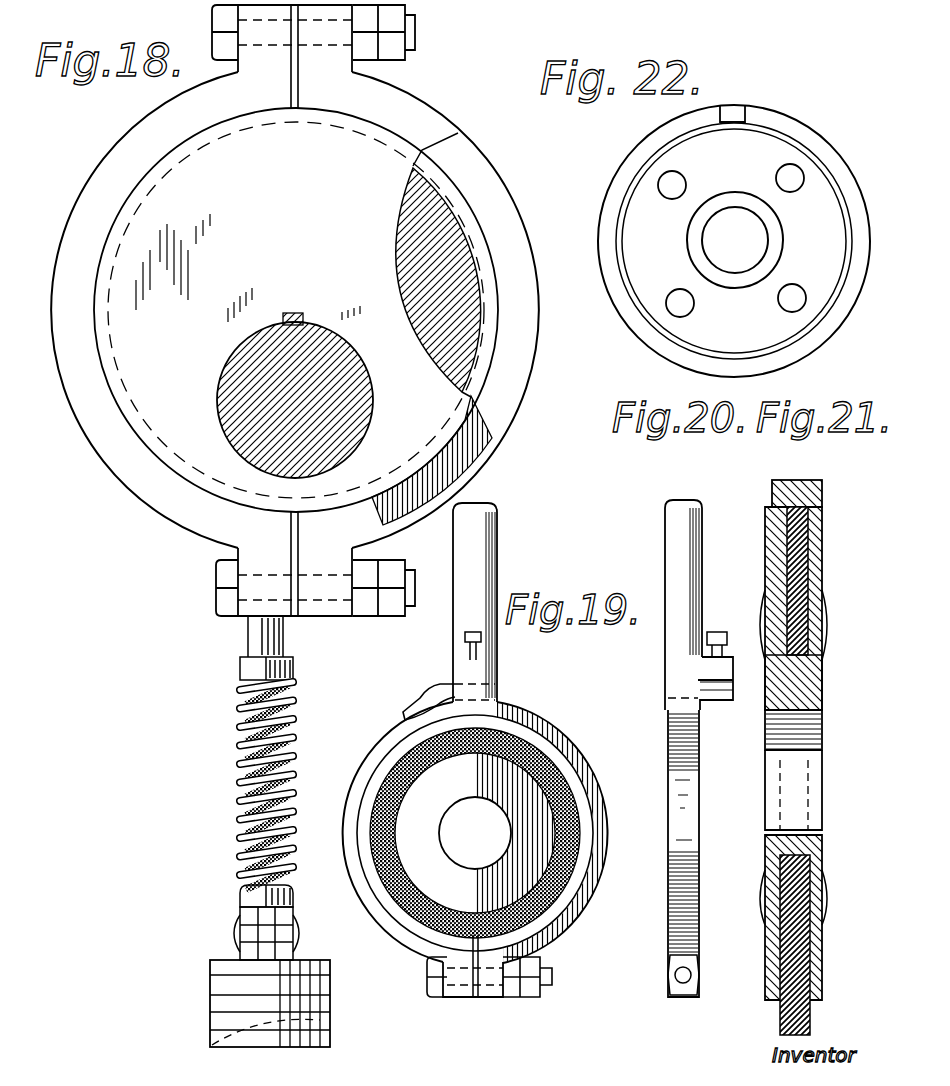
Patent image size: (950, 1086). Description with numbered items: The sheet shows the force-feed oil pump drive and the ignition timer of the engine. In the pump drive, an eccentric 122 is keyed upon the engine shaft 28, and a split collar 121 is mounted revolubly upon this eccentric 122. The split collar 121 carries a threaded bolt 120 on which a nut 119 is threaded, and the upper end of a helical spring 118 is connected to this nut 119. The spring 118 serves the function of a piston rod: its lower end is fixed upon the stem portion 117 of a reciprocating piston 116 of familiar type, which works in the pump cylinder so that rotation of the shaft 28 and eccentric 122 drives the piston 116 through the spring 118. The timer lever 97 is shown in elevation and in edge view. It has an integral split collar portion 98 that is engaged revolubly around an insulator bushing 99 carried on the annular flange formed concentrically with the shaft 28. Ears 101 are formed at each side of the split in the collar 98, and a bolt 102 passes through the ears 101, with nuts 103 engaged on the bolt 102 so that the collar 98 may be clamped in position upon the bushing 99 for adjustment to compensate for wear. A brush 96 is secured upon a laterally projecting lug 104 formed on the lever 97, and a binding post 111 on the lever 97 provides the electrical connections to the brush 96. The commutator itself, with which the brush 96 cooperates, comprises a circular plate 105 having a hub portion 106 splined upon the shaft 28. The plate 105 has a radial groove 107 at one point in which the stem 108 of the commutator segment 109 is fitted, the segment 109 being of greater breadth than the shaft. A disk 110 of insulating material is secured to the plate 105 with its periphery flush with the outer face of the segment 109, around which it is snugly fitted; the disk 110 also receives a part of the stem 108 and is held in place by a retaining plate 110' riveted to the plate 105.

In FIG. 18, the shaft 28 is at (225, 400).
In FIG. 19, the brush 96 is at (436, 690).
In FIG. 20, the brush 96 is at (728, 705).
In FIG. 19, the lever 97 is at (458, 600).
In FIG. 20, the lever 97 is at (668, 548).
In FIG. 19, the split collar portion 98 is at (572, 778).
In FIG. 20, the split collar portion 98 is at (690, 820).
In FIG. 19, the insulator bushing 99 is at (400, 803).
In FIG. 19, the ears 101 is at (488, 1000).
In FIG. 19, the bolt 102 is at (677, 973).
In FIG. 19, the nuts 103 is at (667, 990).
In FIG. 19, the laterally projecting lug 104 is at (492, 668).
In FIG. 20, the laterally projecting lug 104 is at (712, 668).
In FIG. 21, the circular plate 105 is at (776, 950).
In FIG. 21, the hub portion 106 is at (822, 682).
In FIG. 22, the hub portion 106 is at (737, 285).
In FIG. 21, the radial groove 107 is at (787, 515).
In FIG. 21, the stem 108 is at (787, 565).
In FIG. 21, the commutator segment 109 is at (775, 485).
In FIG. 22, the commutator segment 109 is at (743, 106).
In FIG. 21, the disk 110 is at (818, 668).
In FIG. 22, the disk 110 is at (711, 241).
In FIG. 21, the retaining plate 110' is at (817, 917).
In FIG. 22, the retaining plate 110' is at (696, 241).
In FIG. 19, the binding post 111 is at (463, 638).
In FIG. 20, the binding post 111 is at (719, 632).
In FIG. 18, the reciprocating piston 116 is at (220, 1000).
In FIG. 18, the stem portion 117 is at (247, 918).
In FIG. 18, the helical spring 118 is at (240, 852).
In FIG. 18, the nut 119 is at (240, 672).
In FIG. 18, the threaded bolt 120 is at (255, 632).
In FIG. 18, the split collar 121 is at (435, 115).
In FIG. 18, the eccentric 122 is at (264, 255).